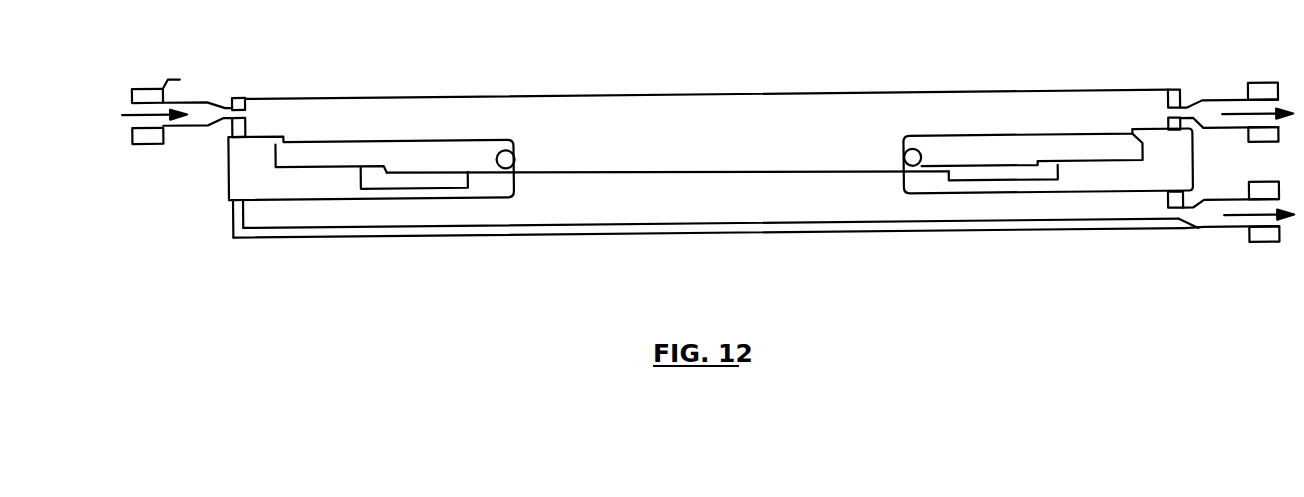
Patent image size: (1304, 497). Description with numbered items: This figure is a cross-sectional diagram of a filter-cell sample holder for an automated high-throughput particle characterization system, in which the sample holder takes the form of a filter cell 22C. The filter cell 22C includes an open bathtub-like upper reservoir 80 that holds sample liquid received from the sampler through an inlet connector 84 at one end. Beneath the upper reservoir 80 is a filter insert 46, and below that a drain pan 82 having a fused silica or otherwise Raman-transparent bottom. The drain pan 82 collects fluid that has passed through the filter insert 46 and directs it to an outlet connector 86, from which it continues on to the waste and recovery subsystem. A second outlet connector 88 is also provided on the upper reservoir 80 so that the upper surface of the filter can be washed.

The upper reservoir 80 is at (1132, 99).
The filter cell 22C is at (228, 161).
The filter insert 46 is at (667, 177).
The inlet connector 84 is at (183, 83).
The drain pan 82 is at (232, 238).
The second outlet connector 88 is at (1250, 93).
The outlet connector 86 is at (1247, 252).